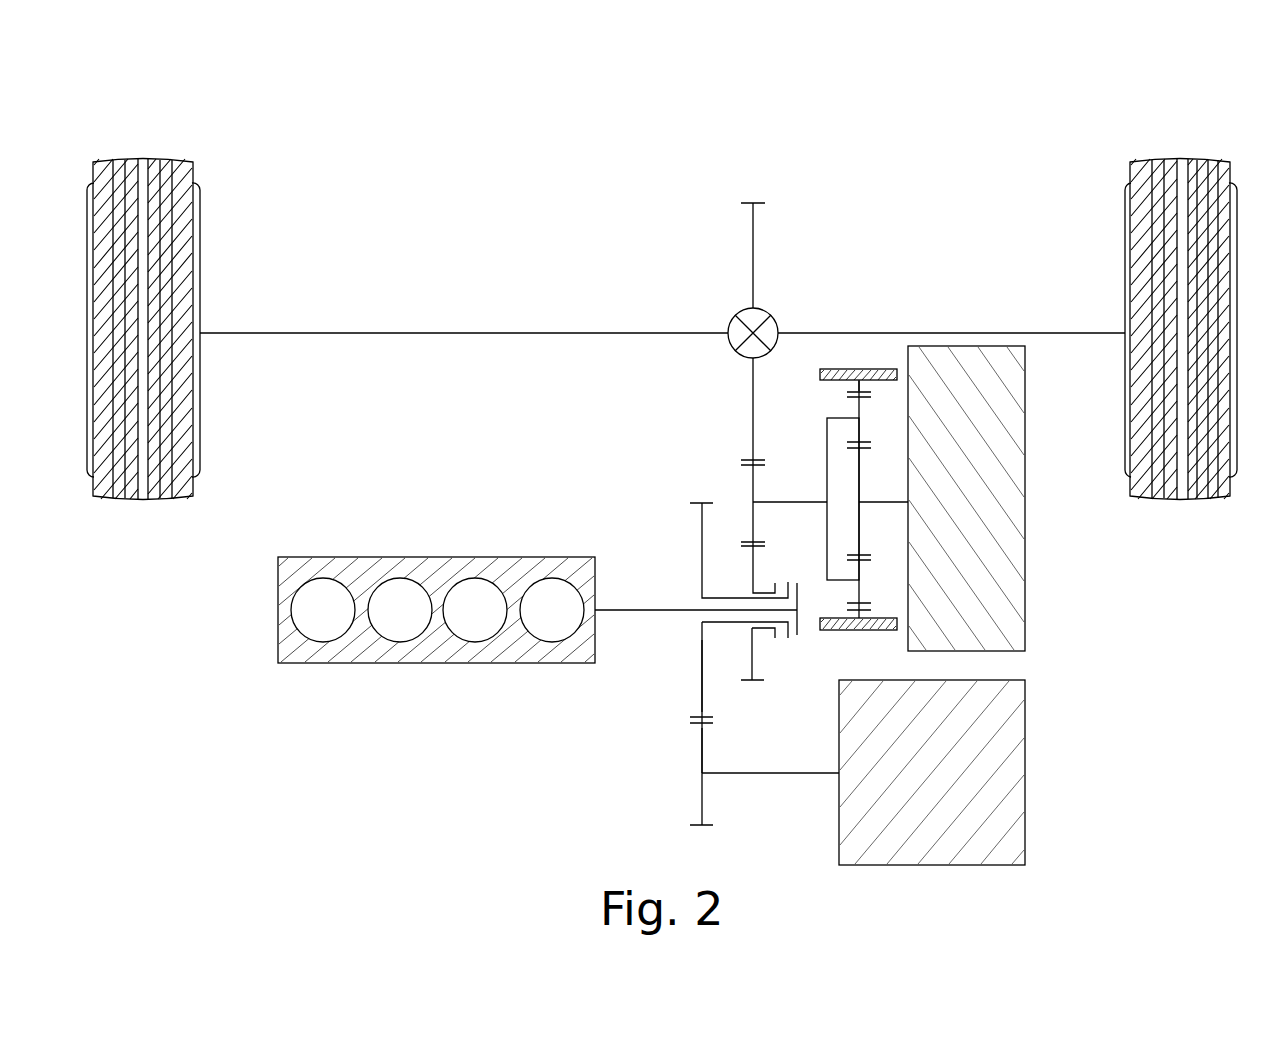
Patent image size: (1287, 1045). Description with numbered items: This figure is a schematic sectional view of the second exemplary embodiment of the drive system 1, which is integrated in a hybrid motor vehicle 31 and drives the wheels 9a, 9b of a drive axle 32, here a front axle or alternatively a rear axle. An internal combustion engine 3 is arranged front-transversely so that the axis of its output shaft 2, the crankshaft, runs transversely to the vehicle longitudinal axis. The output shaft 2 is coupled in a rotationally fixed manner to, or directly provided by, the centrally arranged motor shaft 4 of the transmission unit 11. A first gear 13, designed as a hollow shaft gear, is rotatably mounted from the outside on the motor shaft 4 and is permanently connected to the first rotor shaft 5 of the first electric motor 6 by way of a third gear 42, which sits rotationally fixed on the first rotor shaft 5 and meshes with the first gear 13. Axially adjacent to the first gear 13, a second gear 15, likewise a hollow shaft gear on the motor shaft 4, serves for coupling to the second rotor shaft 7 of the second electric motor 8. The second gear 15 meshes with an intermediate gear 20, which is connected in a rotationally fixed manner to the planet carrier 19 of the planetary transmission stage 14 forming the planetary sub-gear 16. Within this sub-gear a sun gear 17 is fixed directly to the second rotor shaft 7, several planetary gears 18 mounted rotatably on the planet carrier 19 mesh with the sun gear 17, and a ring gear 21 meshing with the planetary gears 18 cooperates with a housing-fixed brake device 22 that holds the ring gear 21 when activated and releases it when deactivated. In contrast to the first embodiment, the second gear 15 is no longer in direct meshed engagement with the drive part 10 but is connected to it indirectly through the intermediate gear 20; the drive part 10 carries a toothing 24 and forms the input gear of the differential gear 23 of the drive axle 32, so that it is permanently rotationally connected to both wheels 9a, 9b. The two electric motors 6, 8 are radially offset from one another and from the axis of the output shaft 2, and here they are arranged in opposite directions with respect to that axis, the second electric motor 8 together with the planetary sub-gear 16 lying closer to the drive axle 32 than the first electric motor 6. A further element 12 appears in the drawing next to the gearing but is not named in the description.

The drive system 1 is at (494, 198).
The output shaft 2 is at (660, 607).
The internal combustion engine 3 is at (347, 646).
The motor shaft 4 is at (646, 676).
The first rotor shaft 5 is at (770, 823).
The first electric motor 6 is at (1003, 796).
The second rotor shaft 7 is at (935, 457).
The second electric motor 8 is at (1003, 625).
The wheel 9a is at (143, 158).
The wheel 9b is at (1182, 158).
The drive part 10 is at (753, 410).
The transmission unit 11 is at (822, 320).
The planetary gear set ring gear 12 is at (789, 570).
The first gear 13 is at (695, 715).
The planetary transmission stage 14 is at (878, 296).
The second gear 15 is at (756, 655).
The planetary sub-gear 16 is at (882, 358).
The sun gear 17 is at (862, 448).
The planetary gears 18 is at (862, 395).
The planet carrier 19 is at (827, 465).
The intermediate gear 20 is at (741, 462).
The ring gear 21 is at (857, 383).
The brake device 22 is at (848, 632).
The differential gear 23 is at (731, 300).
The toothing 24 is at (758, 200).
The hybrid motor vehicle 31 is at (404, 118).
The drive axle 32 is at (244, 486).
The third gear 42 is at (693, 753).